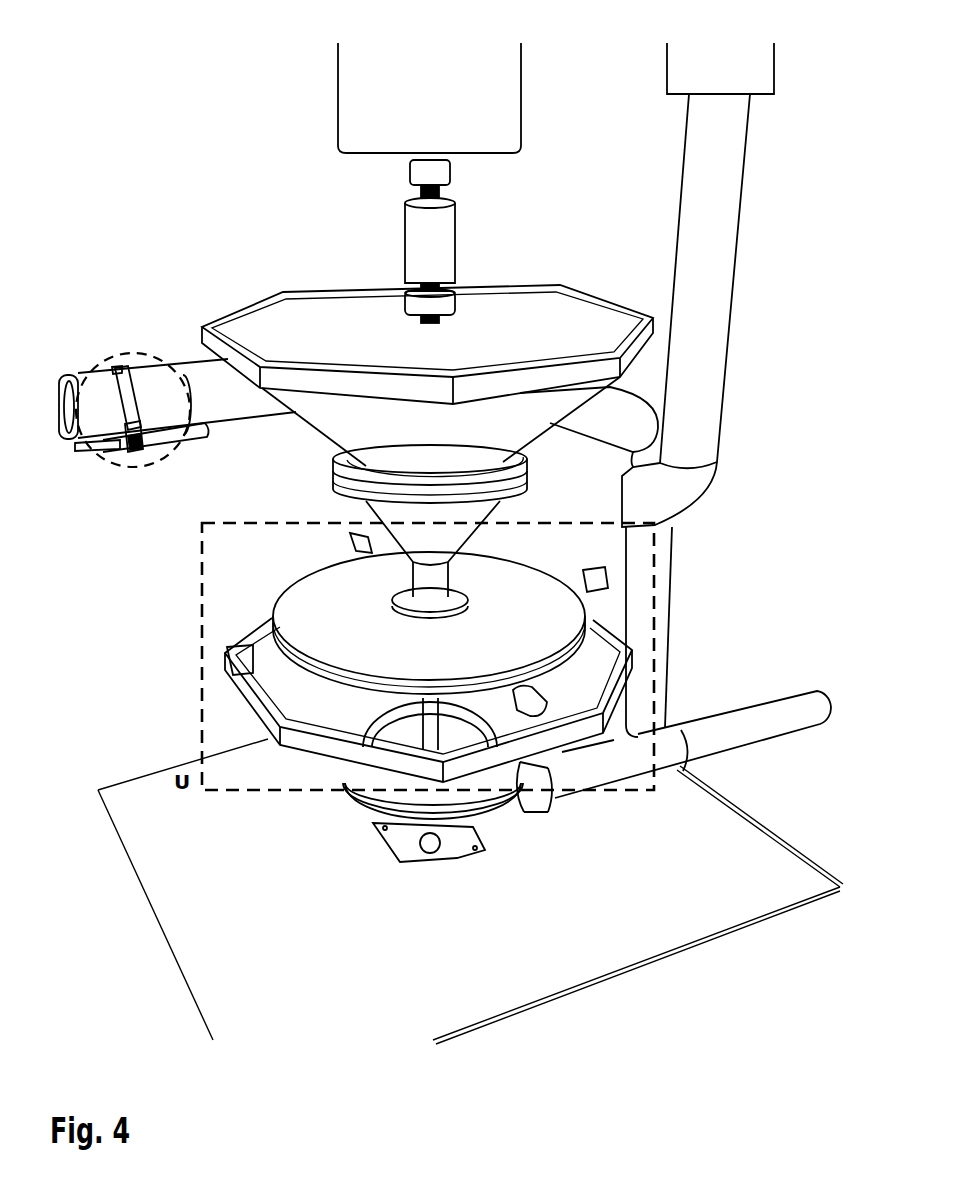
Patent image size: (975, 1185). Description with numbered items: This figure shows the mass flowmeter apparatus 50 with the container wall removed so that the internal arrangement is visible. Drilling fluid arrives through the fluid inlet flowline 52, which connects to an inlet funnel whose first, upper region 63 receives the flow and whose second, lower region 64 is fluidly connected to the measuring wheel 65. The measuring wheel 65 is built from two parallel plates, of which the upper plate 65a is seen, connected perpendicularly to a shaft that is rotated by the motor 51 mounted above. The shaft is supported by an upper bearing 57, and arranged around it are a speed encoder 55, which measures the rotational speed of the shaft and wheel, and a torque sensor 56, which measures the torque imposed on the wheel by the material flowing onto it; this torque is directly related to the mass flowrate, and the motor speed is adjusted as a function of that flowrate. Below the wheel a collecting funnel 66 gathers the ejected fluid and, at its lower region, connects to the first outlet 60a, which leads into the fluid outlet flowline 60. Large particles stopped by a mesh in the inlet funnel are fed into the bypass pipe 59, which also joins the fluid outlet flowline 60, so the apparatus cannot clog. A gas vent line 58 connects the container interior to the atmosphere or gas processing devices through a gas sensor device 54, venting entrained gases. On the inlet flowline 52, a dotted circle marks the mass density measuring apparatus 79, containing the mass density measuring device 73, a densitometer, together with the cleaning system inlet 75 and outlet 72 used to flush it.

The mass flowmeter apparatus 50 is at (790, 310).
The motor 51 is at (337, 90).
The fluid inlet flowline 52 is at (152, 367).
The gas sensor device 54 is at (777, 52).
The speed encoder 55 is at (400, 173).
The torque sensor 56 is at (458, 235).
The upper bearing 57 is at (452, 300).
The gas vent line 58 is at (720, 418).
The bypass pipe 59 is at (668, 618).
The fluid outlet flowline 60 is at (727, 752).
The outlet (first outlet) 60a is at (524, 797).
The inlet funnel first region 63 is at (257, 273).
The inlet funnel second region 64 is at (347, 492).
The measuring wheel 65 is at (280, 585).
The upper plate 65a is at (290, 620).
The collecting funnel 66 is at (263, 700).
The cleaning system outlet 72 is at (85, 372).
The mass density measuring device 73 is at (138, 440).
The cleaning system inlet 75 is at (92, 451).
The mass density measuring apparatus 79 is at (118, 467).